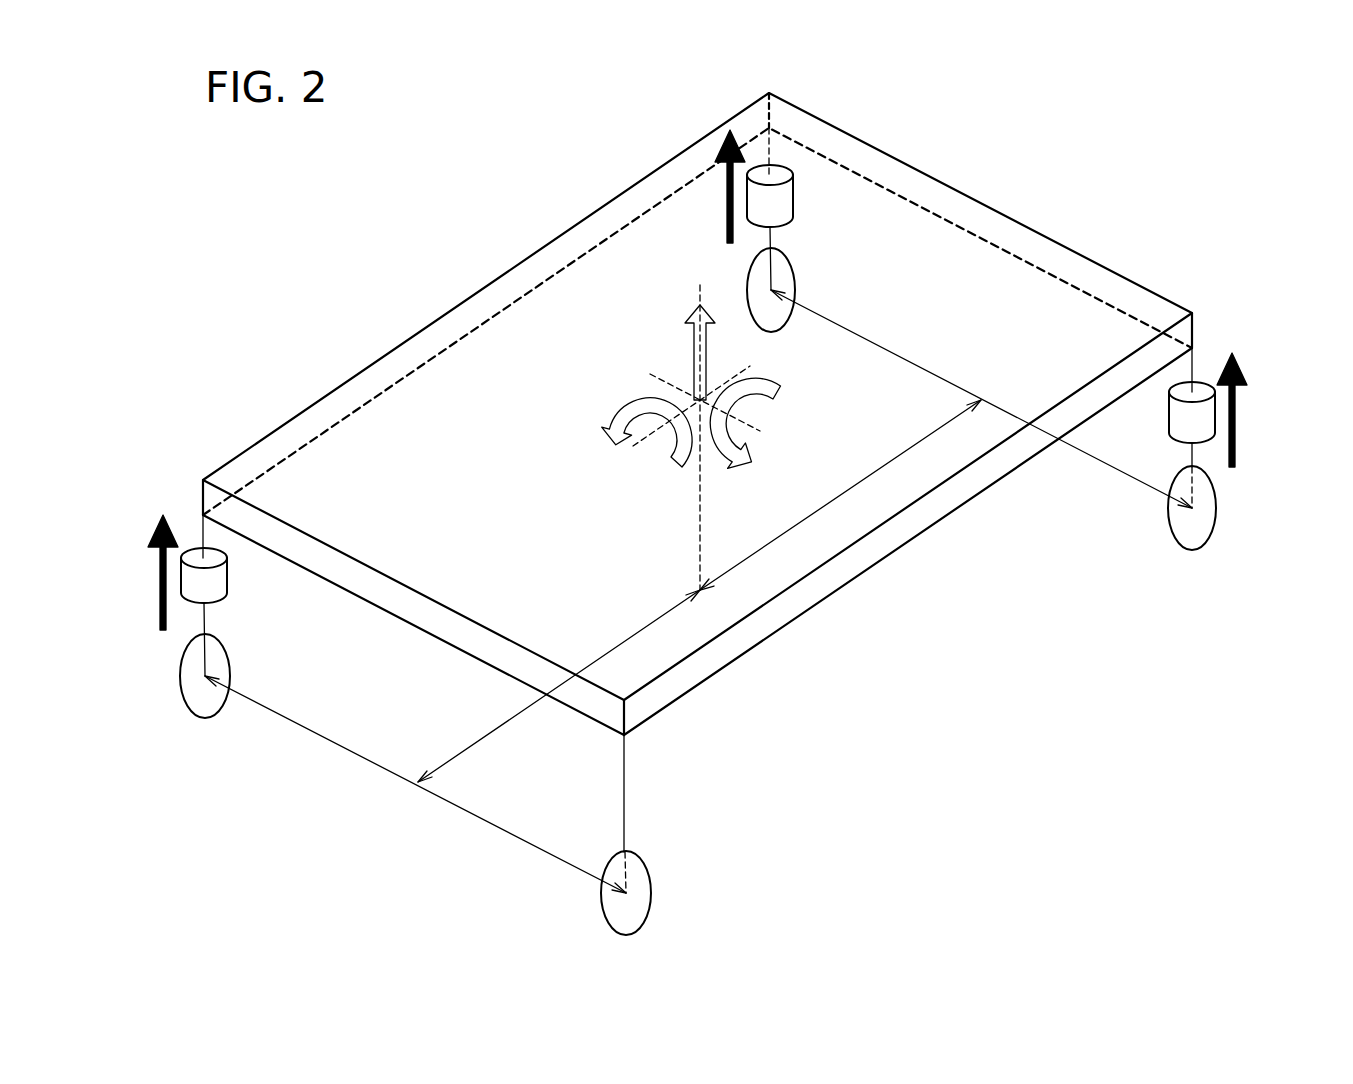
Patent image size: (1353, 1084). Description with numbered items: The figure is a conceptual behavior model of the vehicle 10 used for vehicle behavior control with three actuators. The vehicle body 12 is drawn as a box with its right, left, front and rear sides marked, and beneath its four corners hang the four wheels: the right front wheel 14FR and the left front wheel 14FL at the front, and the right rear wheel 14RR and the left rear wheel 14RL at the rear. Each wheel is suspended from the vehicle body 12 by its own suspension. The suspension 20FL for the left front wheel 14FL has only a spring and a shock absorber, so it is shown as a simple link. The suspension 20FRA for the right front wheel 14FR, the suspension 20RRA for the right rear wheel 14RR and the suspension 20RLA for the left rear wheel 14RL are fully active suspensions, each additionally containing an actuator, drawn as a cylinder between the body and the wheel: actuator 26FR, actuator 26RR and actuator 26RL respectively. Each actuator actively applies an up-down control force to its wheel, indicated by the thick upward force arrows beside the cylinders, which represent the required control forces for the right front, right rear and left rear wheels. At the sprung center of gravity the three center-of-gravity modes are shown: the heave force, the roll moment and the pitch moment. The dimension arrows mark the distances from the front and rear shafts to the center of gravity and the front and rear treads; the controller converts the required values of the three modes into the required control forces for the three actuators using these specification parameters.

The vehicle 10 is at (328, 340).
The vehicle body 12 is at (522, 260).
The right front wheel 14FR is at (231, 654).
The left front wheel 14FL is at (649, 867).
The right rear wheel 14RR is at (796, 268).
The left rear wheel 14RL is at (1170, 527).
The suspension 20FRA is at (243, 574).
The suspension 20RRA is at (806, 183).
The suspension 20RLA is at (1157, 414).
The suspension 20FL is at (642, 805).
The actuator 26FR is at (198, 555).
The actuator 26RR is at (763, 170).
The actuator 26RL is at (1195, 385).